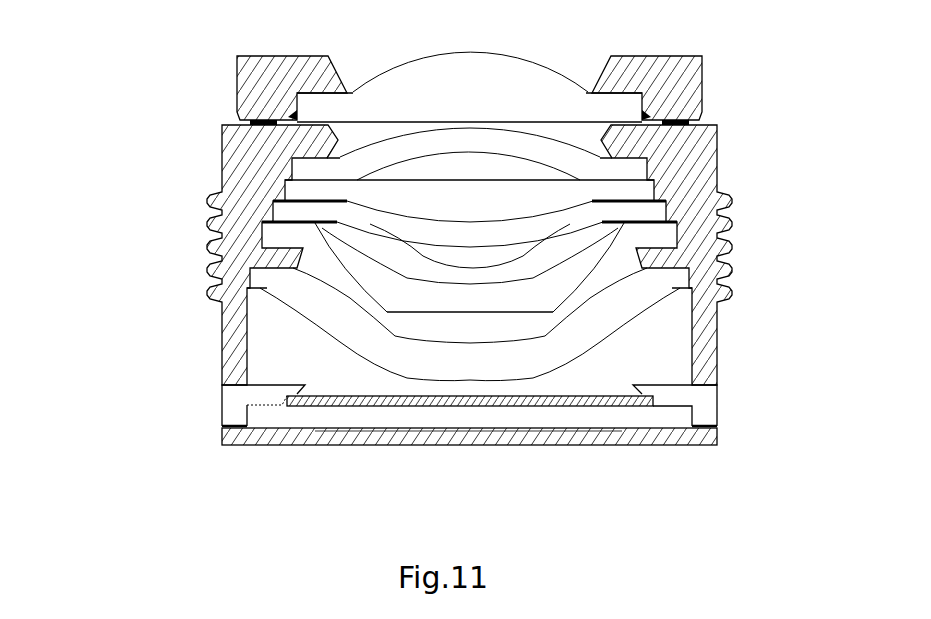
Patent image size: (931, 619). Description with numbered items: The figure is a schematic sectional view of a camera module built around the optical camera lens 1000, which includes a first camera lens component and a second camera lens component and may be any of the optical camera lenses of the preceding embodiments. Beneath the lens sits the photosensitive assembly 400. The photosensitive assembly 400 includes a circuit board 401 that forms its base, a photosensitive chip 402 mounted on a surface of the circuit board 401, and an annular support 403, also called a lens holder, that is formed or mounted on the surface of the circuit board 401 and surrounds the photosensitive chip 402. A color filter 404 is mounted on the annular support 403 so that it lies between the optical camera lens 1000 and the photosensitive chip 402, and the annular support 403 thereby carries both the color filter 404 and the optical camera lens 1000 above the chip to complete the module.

The optical camera lens 1000 is at (727, 168).
The photosensitive assembly 400 is at (210, 408).
The circuit board 401 is at (247, 428).
The photosensitive chip 402 is at (416, 428).
The annular support 403 is at (688, 396).
The color filter 404 is at (310, 393).